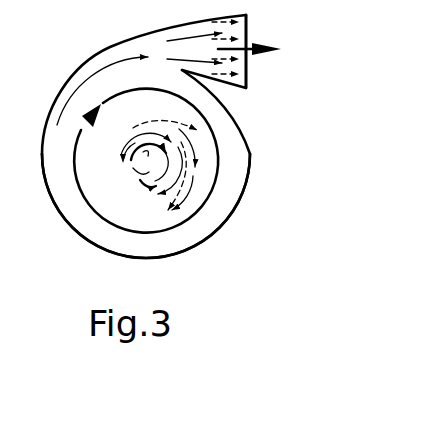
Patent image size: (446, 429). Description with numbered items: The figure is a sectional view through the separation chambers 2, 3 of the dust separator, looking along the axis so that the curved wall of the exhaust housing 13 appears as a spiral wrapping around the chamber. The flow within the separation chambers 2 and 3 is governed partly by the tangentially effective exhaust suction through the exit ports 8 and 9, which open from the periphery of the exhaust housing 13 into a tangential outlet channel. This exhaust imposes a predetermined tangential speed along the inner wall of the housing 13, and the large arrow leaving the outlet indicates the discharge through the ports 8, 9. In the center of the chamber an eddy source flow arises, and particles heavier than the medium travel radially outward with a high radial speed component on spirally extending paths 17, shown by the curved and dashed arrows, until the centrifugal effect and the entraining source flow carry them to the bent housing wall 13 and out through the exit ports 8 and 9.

The separation chamber 2 is at (207, 241).
The separation chamber 3 is at (207, 241).
The exit port 8 is at (262, 51).
The exit port 9 is at (247, 32).
The exhaust housing 13 is at (82, 71).
The spirally extending paths 17 is at (163, 122).